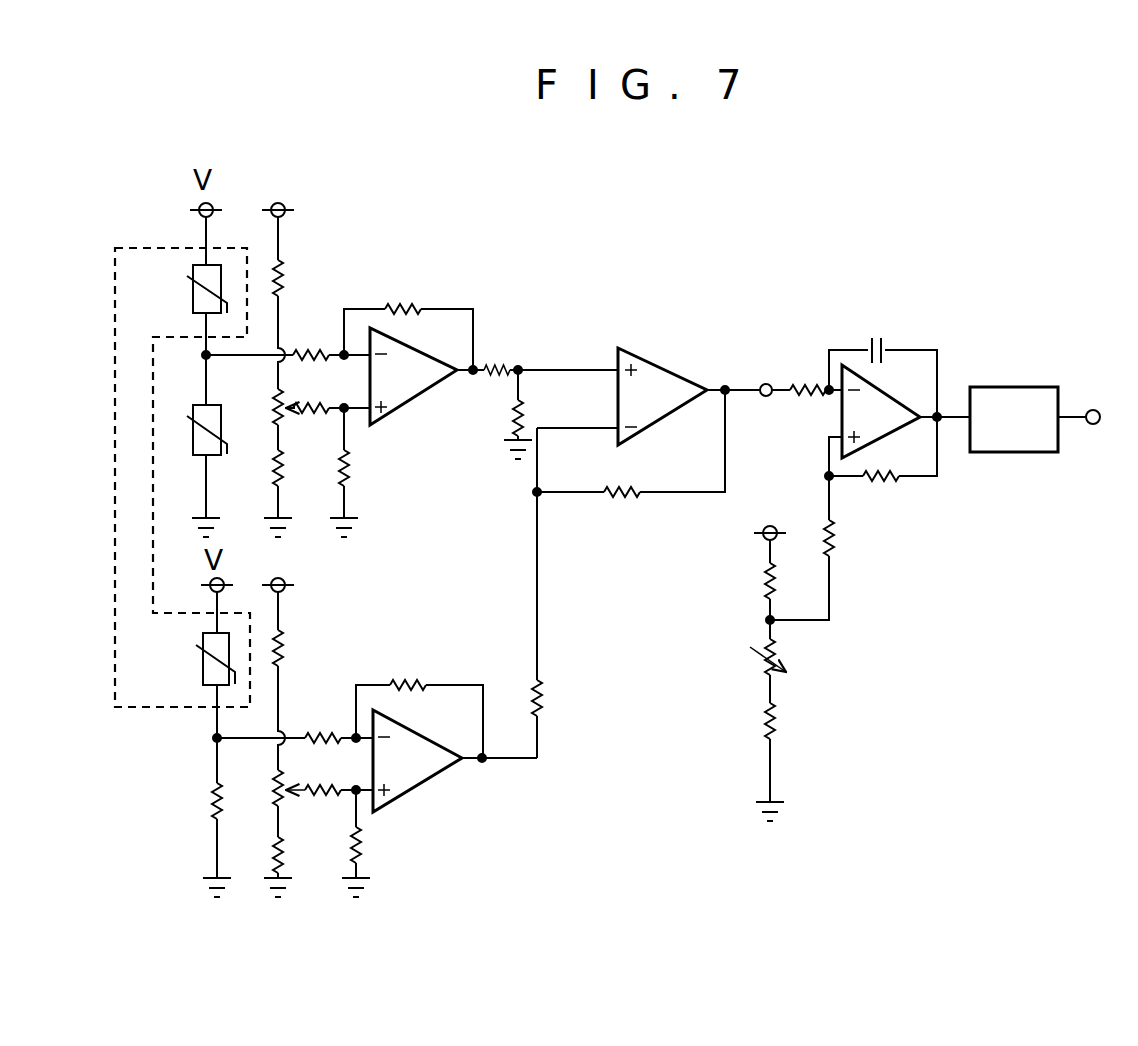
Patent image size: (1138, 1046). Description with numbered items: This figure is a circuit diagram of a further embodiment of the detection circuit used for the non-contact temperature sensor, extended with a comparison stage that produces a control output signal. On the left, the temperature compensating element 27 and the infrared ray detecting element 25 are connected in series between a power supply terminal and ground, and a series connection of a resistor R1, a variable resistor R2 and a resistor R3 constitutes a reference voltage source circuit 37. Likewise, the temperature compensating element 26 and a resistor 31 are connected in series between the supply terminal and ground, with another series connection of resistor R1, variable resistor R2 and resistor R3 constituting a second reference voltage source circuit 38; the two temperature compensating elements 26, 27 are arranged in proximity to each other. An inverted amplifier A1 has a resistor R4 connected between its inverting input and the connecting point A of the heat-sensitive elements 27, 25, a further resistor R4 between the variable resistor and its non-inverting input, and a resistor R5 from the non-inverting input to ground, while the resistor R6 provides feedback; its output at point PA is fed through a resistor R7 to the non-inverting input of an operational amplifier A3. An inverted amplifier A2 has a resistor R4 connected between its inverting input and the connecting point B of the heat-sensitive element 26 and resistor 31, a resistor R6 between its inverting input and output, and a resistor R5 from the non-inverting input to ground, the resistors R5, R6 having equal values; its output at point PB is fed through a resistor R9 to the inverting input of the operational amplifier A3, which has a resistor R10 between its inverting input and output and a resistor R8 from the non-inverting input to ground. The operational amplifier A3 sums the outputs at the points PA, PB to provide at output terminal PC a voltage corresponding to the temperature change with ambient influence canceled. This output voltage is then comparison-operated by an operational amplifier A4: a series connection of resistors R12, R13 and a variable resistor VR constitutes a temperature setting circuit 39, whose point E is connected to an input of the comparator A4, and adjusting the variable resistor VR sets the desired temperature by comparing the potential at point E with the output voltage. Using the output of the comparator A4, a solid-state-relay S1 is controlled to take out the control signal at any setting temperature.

The infrared ray detecting element 25 is at (192, 437).
The temperature compensating element 26 is at (197, 668).
The temperature compensating element 27 is at (192, 273).
The resistor 31 is at (215, 818).
The reference voltage source circuit 37 is at (305, 519).
The reference voltage source circuit 38 is at (325, 720).
The temperature setting circuit 39 is at (766, 666).
The connecting point A is at (207, 357).
The connecting point B is at (213, 742).
The point E is at (757, 623).
The inverted amplifier A1 is at (408, 385).
The inverted amplifier A2 is at (420, 772).
The operational amplifier A3 is at (650, 372).
The operational amplifier (comparator) A4 is at (887, 402).
The point PA is at (474, 368).
The point PB is at (485, 755).
The output terminal PC is at (710, 383).
The resistor R1 is at (300, 465).
The variable resistor R2 is at (277, 412).
The resistor R3 is at (302, 662).
The resistor R4 is at (319, 577).
The resistor R5 is at (374, 643).
The resistor R6 is at (413, 515).
The resistor R7 is at (481, 391).
The resistor R8 is at (537, 414).
The resistor R9 is at (561, 701).
The resistor R10 is at (631, 467).
The resistor R12 is at (799, 585).
The resistor R13 is at (800, 725).
The variable resistor VR is at (793, 664).
The solid-state-relay S1 is at (1032, 452).